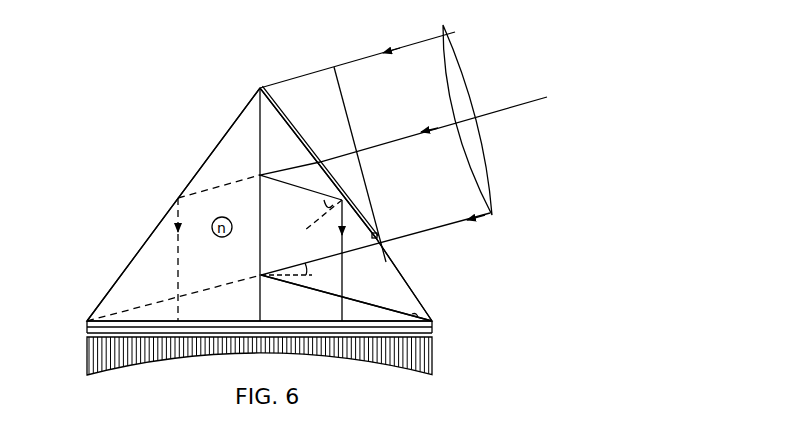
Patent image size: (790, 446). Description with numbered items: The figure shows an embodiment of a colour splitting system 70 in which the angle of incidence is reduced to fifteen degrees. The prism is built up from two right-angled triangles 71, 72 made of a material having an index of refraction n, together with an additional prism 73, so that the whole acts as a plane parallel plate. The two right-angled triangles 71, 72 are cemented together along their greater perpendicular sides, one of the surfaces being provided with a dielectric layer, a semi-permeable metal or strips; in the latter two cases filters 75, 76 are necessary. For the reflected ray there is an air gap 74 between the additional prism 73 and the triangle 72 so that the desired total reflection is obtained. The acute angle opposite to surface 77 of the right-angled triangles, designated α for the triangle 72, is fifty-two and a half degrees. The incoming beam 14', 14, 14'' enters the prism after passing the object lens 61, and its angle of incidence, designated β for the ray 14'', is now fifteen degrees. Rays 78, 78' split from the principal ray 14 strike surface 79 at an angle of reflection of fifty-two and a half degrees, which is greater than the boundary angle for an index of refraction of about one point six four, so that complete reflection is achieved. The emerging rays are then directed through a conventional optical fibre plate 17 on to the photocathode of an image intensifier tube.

The principal ray 14 is at (403, 163).
The beam ray 14' is at (357, 60).
The beam ray 14'' is at (388, 267).
The optical fibre plate 17 is at (430, 358).
The object lens 61 is at (470, 90).
The prism 70 is at (237, 104).
The right-angled triangle 71 is at (206, 161).
The right-angled triangle 72 is at (404, 281).
The additional prism 73 is at (345, 120).
The air gap 74 is at (378, 233).
The filter 75 is at (87, 329).
The filter 76 is at (434, 328).
The surface 77 is at (260, 132).
The reflected ray 78 is at (174, 248).
The reflected ray 78' is at (361, 260).
The reflecting surface 79 is at (419, 301).